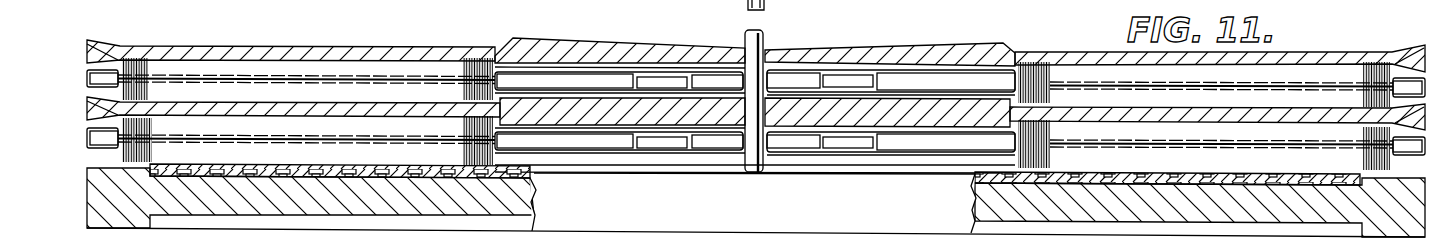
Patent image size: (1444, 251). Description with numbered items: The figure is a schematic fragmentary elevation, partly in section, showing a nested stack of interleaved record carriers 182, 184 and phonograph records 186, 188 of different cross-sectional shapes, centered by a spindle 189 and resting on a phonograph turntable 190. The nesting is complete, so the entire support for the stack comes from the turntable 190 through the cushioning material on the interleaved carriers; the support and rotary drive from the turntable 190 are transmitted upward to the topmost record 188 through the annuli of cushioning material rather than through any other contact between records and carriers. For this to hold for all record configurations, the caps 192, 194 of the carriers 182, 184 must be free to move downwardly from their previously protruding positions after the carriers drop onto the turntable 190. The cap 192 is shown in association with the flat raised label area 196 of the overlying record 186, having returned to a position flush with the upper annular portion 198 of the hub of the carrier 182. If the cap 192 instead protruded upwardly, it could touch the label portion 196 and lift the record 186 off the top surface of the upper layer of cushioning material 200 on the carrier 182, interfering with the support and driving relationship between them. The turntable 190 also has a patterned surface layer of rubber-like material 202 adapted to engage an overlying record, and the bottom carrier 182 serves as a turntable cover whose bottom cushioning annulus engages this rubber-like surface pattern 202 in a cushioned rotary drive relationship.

The carrier 182 is at (86, 137).
The carrier 184 is at (86, 80).
The phonograph record 186 is at (86, 108).
The topmost record 188 is at (86, 50).
The spindle 189 is at (765, 32).
The phonograph turntable 190 is at (86, 191).
The cap 192 is at (793, 135).
The cap 194 is at (806, 70).
The flat raised label area 196 is at (713, 122).
The upper annular portion of the hub 198 is at (601, 122).
The cushioning material 200 is at (756, 114).
The patterned surface layer of rubber-like material 202 is at (248, 167).